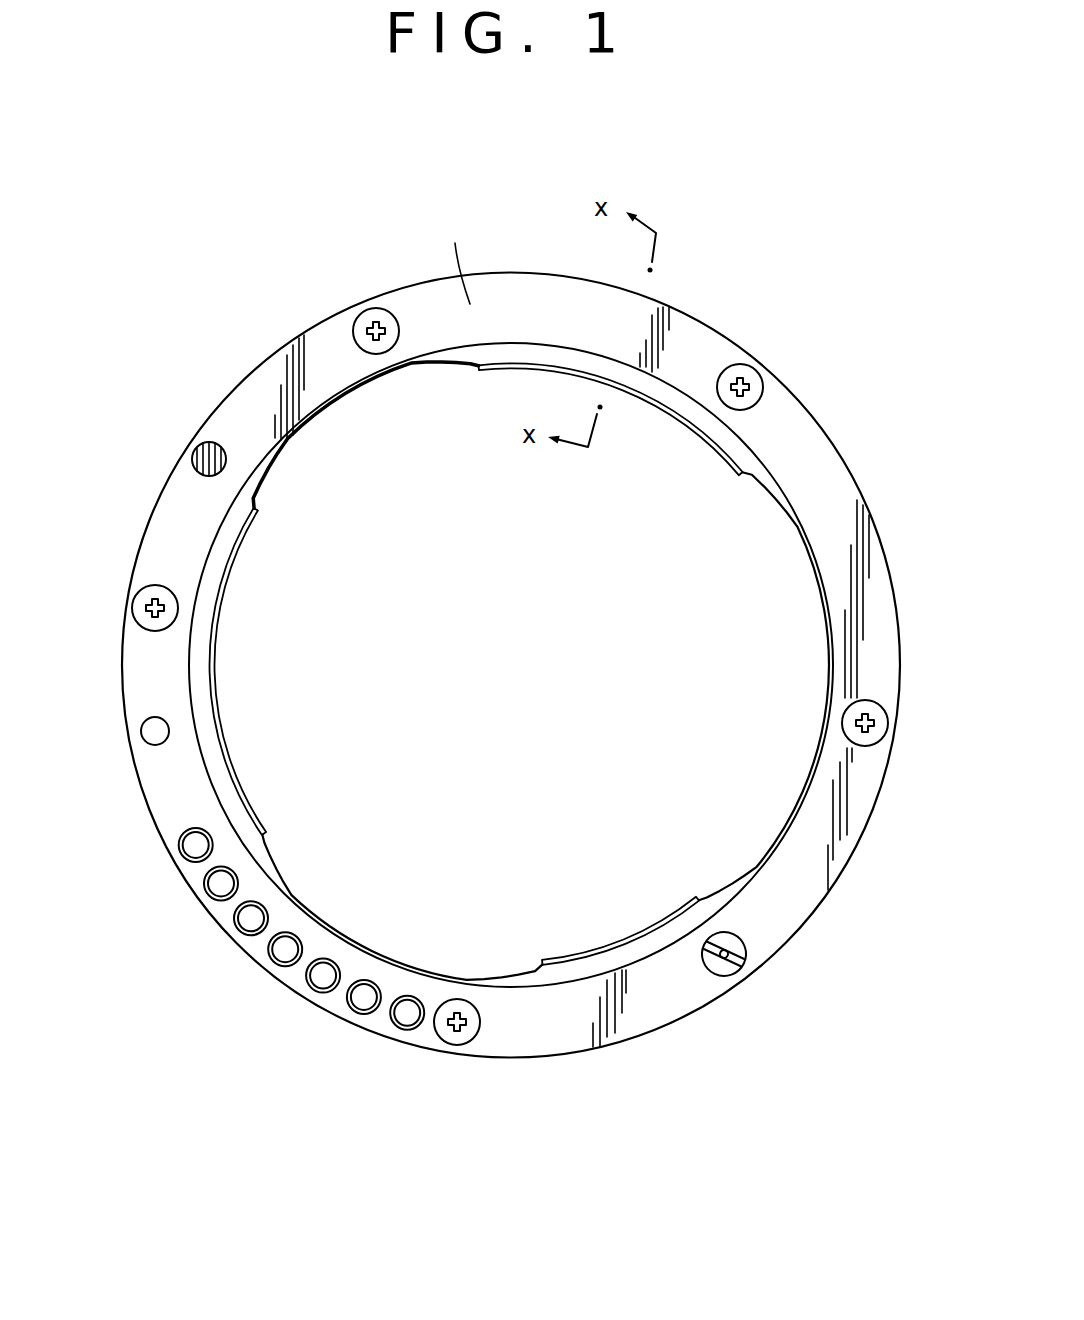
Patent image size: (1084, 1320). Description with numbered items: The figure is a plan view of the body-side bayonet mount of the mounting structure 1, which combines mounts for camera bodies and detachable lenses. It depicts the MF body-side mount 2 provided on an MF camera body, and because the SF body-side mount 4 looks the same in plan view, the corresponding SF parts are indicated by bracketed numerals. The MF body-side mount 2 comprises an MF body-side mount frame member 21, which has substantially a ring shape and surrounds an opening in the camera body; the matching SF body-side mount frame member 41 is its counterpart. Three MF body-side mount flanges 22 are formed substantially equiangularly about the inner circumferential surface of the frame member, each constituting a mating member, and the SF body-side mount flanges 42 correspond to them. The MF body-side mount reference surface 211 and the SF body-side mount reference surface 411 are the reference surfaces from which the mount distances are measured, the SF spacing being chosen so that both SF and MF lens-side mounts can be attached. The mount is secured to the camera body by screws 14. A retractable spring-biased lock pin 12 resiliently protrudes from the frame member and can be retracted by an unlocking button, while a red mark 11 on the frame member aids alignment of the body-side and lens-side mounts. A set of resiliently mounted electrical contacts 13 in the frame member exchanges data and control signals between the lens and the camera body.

The mounting structure 1 is at (578, 1170).
The MF body-side mount 2 is at (511, 696).
The SF body-side mount 4 is at (511, 696).
The MF body-side mount frame member 21 is at (224, 375).
The SF body-side mount frame member 41 is at (263, 402).
The MF body-side mount reference surface 211 is at (539, 288).
The SF body-side mount reference surface 411 is at (539, 288).
The MF body-side mount flanges 22 is at (519, 671).
The SF body-side mount flanges 42 is at (685, 410).
The red mark 11 is at (192, 451).
The lock pin 12 is at (150, 743).
The electrical contacts 13 is at (232, 935).
The screws 14 is at (366, 321).